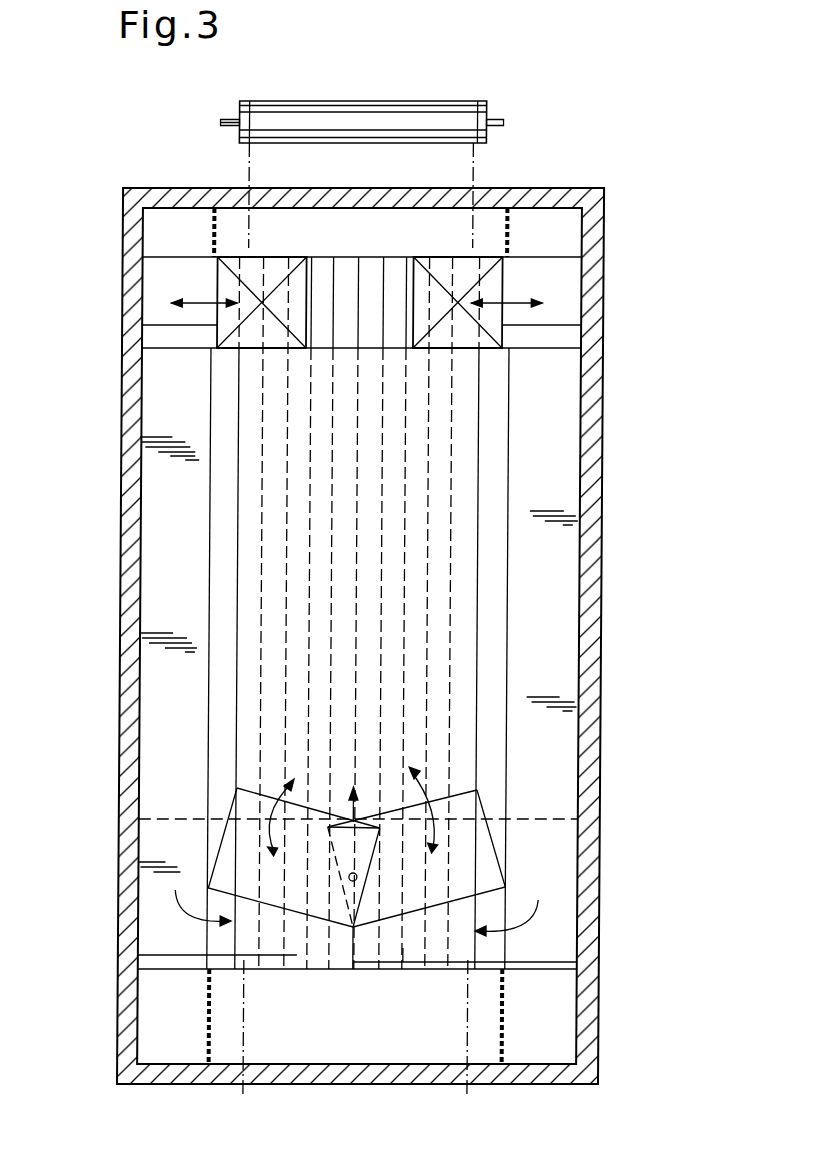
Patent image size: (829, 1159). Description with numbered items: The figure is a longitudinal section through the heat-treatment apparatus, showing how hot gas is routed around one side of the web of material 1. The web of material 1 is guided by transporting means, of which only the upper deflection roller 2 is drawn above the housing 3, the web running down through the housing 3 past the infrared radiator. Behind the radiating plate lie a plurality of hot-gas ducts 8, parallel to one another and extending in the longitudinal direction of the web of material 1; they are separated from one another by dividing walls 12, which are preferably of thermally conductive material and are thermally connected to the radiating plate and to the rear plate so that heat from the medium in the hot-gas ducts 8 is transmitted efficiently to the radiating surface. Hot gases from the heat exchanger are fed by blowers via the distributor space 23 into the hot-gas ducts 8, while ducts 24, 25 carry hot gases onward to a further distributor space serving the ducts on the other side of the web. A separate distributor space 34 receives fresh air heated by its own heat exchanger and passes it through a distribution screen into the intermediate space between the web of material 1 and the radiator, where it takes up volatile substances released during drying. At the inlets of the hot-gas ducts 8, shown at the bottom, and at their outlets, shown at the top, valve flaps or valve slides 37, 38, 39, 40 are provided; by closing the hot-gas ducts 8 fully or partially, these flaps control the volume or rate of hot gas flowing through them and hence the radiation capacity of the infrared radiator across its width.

The web of material 1 is at (435, 167).
The upper deflection roller 2 is at (478, 112).
The housing 3 is at (605, 195).
The hot-gas ducts 8 is at (347, 293).
The dividing walls 12 is at (408, 955).
The distributor space 23 is at (542, 870).
The duct 24 is at (551, 597).
The duct 25 is at (153, 603).
The distributor space 34 is at (434, 1033).
The valve flap or valve slide 37 is at (267, 807).
The valve flap or valve slide 38 is at (481, 795).
The valve flap or valve slide 39 is at (143, 325).
The valve flap or valve slide 40 is at (604, 323).